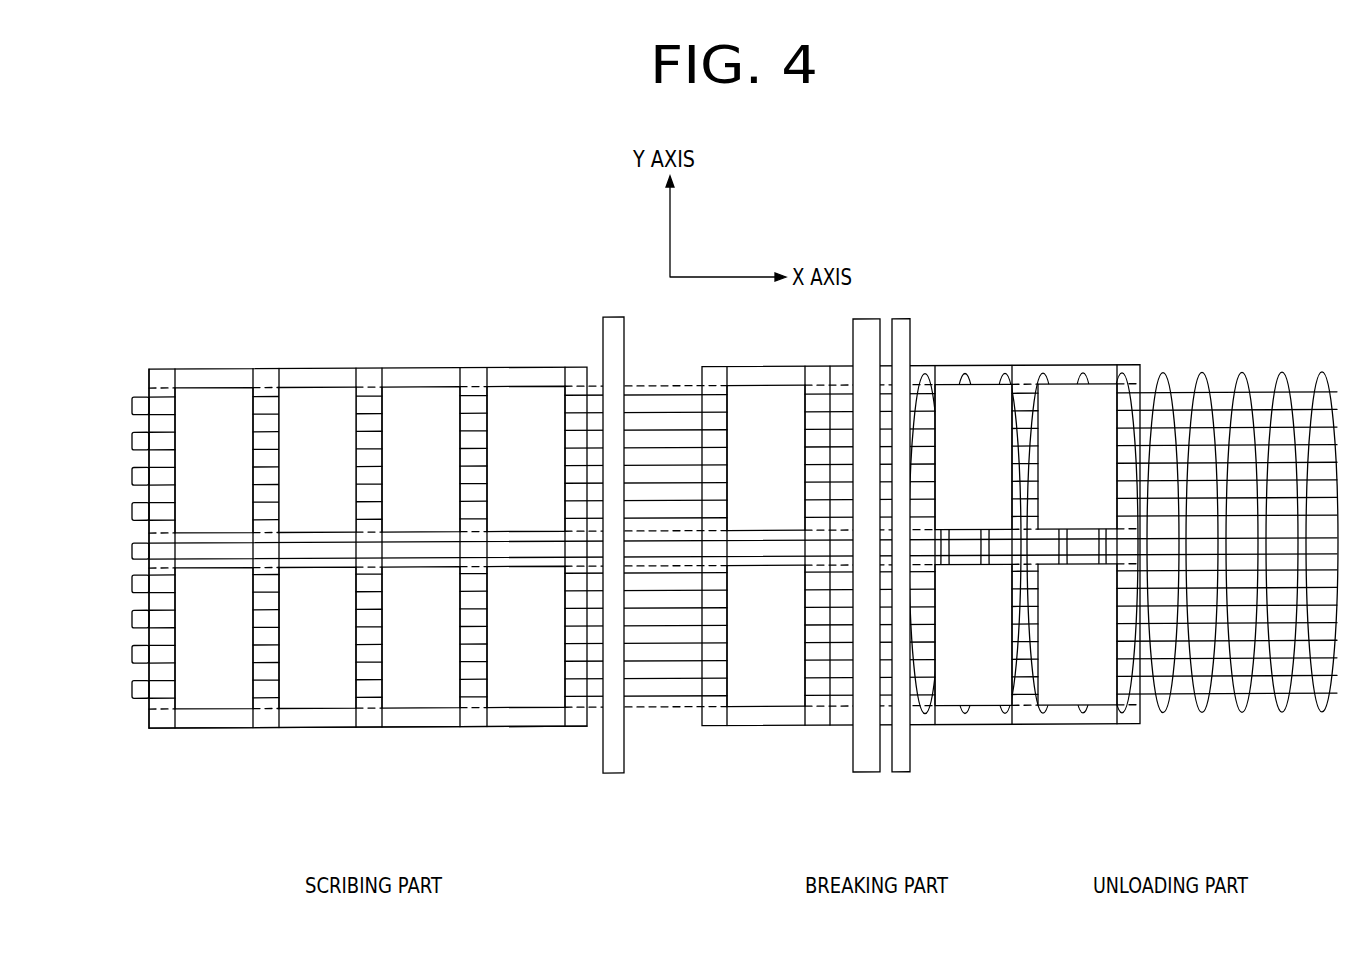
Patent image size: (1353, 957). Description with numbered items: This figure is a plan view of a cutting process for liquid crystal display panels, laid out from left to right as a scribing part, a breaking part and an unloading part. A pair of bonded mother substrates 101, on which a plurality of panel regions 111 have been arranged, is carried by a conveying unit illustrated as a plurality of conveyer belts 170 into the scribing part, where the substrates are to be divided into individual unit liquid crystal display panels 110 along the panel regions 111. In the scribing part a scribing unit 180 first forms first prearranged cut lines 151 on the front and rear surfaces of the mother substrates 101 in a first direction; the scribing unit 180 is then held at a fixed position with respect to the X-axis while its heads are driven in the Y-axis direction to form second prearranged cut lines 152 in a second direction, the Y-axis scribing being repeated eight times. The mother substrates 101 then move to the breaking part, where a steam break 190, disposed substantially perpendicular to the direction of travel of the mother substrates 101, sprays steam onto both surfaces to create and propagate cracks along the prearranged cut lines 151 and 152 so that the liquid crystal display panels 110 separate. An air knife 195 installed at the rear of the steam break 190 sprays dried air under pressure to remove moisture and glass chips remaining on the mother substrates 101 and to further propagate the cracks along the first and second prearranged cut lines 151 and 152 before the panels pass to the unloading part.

The bonded mother substrate 101 is at (213, 369).
The unit liquid crystal display panel 110 is at (317, 412).
The panel region 111 is at (329, 472).
The first prearranged cut line 151 is at (160, 727).
The second prearranged cut line 152 is at (178, 718).
The conveyer belt 170 is at (138, 655).
The scribing unit 180 is at (613, 775).
The steam break 190 is at (869, 775).
The air knife 195 is at (902, 775).